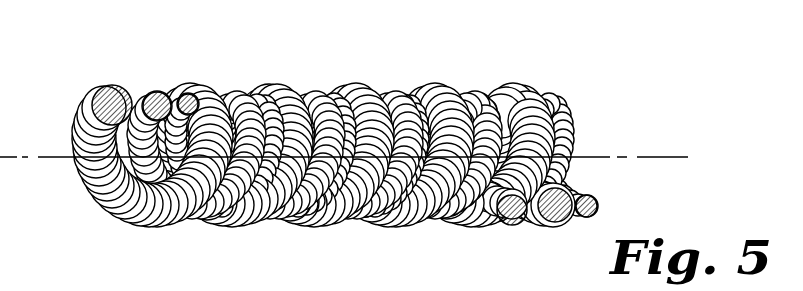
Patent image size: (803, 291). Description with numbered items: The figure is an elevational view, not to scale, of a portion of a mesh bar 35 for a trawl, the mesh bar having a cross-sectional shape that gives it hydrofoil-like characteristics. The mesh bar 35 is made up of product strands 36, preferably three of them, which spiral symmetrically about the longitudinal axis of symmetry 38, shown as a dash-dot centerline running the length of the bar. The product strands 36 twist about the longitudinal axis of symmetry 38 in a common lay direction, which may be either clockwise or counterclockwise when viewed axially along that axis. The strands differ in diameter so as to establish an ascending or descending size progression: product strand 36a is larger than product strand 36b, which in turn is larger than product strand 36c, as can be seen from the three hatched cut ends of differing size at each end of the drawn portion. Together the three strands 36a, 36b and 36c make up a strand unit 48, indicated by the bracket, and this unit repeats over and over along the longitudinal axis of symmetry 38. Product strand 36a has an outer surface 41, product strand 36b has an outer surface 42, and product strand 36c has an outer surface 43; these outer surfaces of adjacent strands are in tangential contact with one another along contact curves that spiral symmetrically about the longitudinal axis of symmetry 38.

The mesh bar 35 is at (647, 129).
The product strands 36 is at (83, 62).
The product strand 36a is at (93, 100).
The product strand 36b is at (170, 96).
The product strand 36c is at (203, 97).
The longitudinal axis of symmetry 38 is at (656, 157).
The outer surface 41 is at (147, 205).
The outer surface 42 is at (240, 207).
The outer surface 43 is at (300, 205).
The strand unit 48 is at (320, 67).